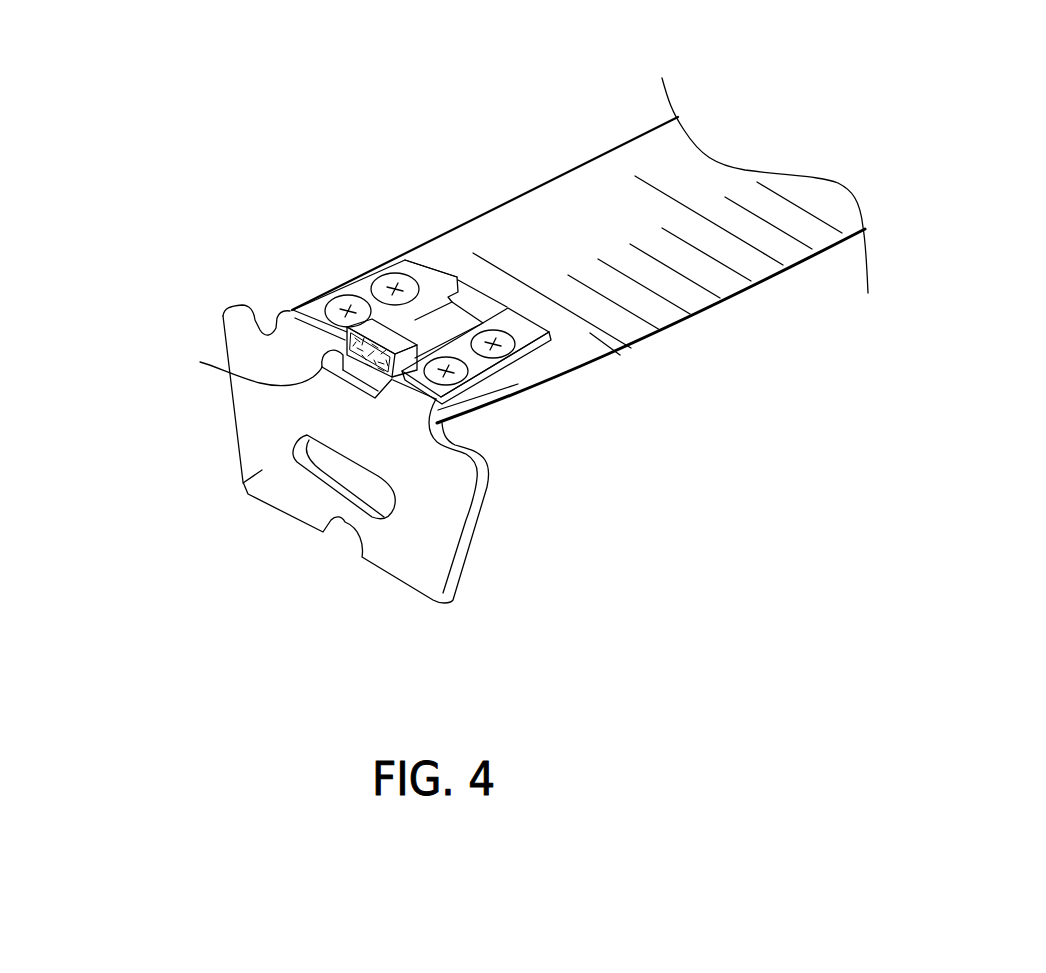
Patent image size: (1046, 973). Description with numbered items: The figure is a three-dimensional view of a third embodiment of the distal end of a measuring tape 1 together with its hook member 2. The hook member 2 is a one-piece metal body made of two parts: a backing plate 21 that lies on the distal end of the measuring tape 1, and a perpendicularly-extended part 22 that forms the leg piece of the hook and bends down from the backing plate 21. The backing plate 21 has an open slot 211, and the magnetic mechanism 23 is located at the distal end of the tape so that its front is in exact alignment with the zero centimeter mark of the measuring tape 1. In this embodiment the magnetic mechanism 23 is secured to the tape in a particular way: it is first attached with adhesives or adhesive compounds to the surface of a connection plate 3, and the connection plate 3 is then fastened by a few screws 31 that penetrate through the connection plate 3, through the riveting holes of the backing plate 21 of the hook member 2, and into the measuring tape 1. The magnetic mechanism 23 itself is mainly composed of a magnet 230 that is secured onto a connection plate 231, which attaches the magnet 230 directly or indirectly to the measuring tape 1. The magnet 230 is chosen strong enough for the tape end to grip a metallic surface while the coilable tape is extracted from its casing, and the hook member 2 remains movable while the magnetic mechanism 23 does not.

The measuring tape 1 is at (614, 349).
The hook member 2 is at (433, 250).
The backing plate 21 is at (357, 286).
The open slot 211 is at (468, 302).
The perpendicularly-extended part 22 is at (256, 501).
The magnetic mechanism 23 is at (290, 308).
The magnet 230 is at (200, 362).
The connection plate 231 is at (580, 374).
The connection plate 3 is at (352, 287).
The screws 31 is at (463, 382).